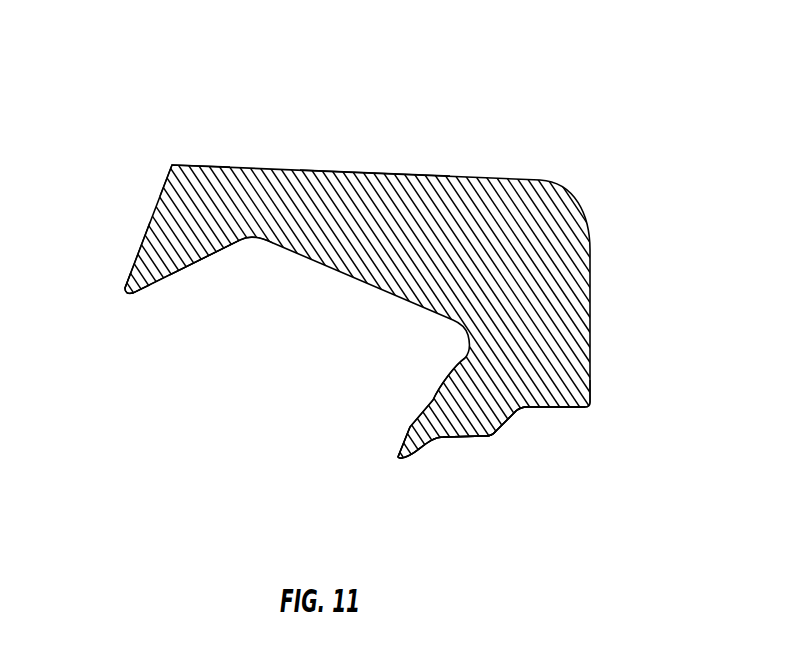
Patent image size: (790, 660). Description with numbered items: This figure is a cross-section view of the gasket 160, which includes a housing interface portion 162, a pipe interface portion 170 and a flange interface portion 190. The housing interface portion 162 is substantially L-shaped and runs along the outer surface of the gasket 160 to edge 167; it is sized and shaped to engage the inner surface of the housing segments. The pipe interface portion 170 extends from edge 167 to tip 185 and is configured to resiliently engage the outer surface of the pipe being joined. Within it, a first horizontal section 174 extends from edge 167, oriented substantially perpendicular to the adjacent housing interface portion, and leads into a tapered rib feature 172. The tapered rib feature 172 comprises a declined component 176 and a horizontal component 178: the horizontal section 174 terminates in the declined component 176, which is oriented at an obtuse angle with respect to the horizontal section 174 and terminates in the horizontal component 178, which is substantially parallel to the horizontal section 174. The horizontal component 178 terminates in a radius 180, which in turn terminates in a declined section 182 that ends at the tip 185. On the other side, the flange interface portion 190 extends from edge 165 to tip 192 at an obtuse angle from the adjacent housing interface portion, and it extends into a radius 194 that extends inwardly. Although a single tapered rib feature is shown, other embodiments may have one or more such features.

The gasket 160 is at (236, 105).
The housing interface portion 162 is at (373, 173).
The edge 165 is at (172, 165).
The edge 167 is at (593, 408).
The pipe interface portion 170 is at (374, 401).
The tapered rib feature 172 is at (524, 450).
The horizontal section 174 is at (563, 408).
The declined component 176 is at (503, 420).
The horizontal component 178 is at (467, 438).
The radius 180 is at (443, 440).
The declined section 182 is at (417, 458).
The tip 185 is at (397, 460).
The flange interface portion 190 is at (140, 311).
The tip 192 is at (127, 292).
The radius 194 is at (197, 270).